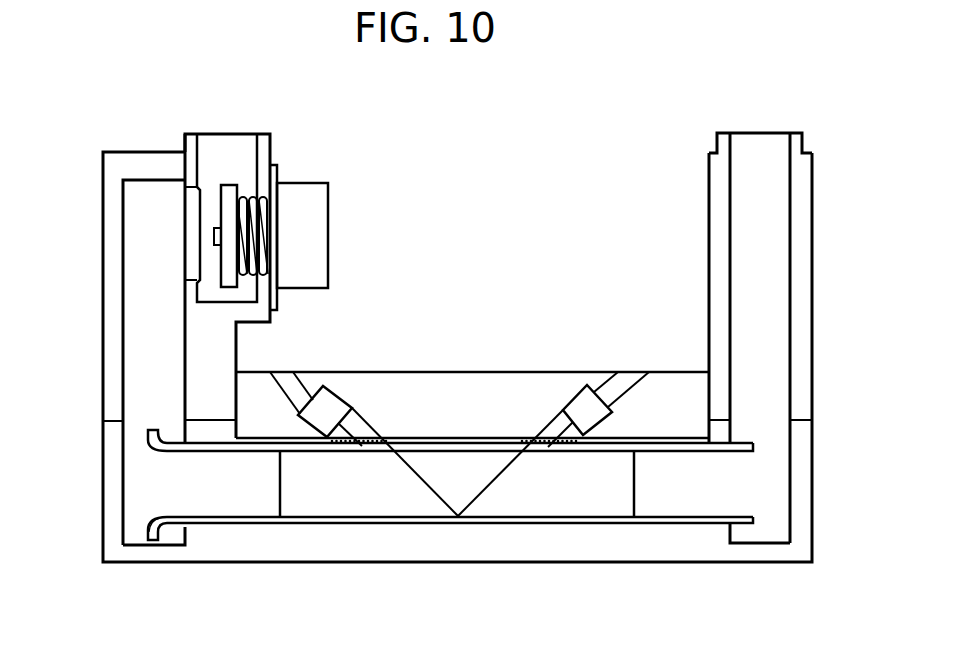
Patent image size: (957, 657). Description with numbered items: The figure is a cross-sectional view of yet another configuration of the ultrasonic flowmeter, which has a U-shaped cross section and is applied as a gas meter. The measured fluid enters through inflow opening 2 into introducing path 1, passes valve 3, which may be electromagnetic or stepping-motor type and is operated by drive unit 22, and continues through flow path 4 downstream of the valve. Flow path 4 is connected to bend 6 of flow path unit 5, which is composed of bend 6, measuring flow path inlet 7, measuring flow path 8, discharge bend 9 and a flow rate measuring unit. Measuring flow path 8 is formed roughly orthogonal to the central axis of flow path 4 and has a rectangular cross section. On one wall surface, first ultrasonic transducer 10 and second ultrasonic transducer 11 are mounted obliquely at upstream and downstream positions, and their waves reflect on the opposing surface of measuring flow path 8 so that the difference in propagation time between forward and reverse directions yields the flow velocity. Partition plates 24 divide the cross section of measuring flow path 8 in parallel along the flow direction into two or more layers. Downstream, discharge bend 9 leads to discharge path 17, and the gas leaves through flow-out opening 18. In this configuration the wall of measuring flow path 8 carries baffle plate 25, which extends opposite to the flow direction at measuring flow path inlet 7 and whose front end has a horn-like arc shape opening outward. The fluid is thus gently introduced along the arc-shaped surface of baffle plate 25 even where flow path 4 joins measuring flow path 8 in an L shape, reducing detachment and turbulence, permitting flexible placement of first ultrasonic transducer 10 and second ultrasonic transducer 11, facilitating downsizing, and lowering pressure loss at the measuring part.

The introducing path 1 is at (103, 202).
The inflow opening 2 is at (215, 142).
The valve 3 is at (230, 197).
The flow path 4 is at (147, 315).
The flow path unit 5 is at (442, 541).
The bend 6 is at (138, 518).
The measuring flow path inlet 7 is at (142, 499).
The measuring flow path 8 is at (552, 520).
The discharge bend 9 is at (772, 503).
The first ultrasonic transducer 10 is at (330, 405).
The second ultrasonic transducer 11 is at (585, 400).
The discharge path 17 is at (777, 307).
The flow-out opening 18 is at (763, 143).
The drive unit 22 is at (310, 205).
The partition plates 24 is at (342, 505).
The baffle plate 25 is at (153, 442).